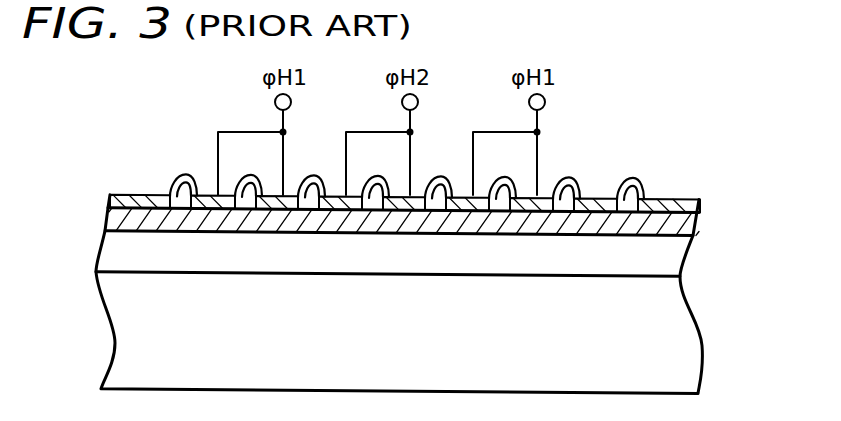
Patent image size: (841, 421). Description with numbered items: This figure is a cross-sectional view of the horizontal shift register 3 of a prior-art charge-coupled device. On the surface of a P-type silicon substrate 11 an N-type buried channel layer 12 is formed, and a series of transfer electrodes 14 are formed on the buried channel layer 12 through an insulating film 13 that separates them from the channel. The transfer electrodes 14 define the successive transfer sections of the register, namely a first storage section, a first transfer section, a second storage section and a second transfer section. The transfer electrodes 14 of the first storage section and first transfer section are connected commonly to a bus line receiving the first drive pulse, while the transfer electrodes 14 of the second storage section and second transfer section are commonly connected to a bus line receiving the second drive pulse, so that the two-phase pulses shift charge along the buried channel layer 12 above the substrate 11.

The horizontal shift register 3 is at (130, 178).
The P-type silicon substrate 11 is at (673, 340).
The N-type buried channel layer 12 is at (673, 260).
The insulating film 13 is at (662, 200).
The transfer electrodes 14 is at (560, 178).